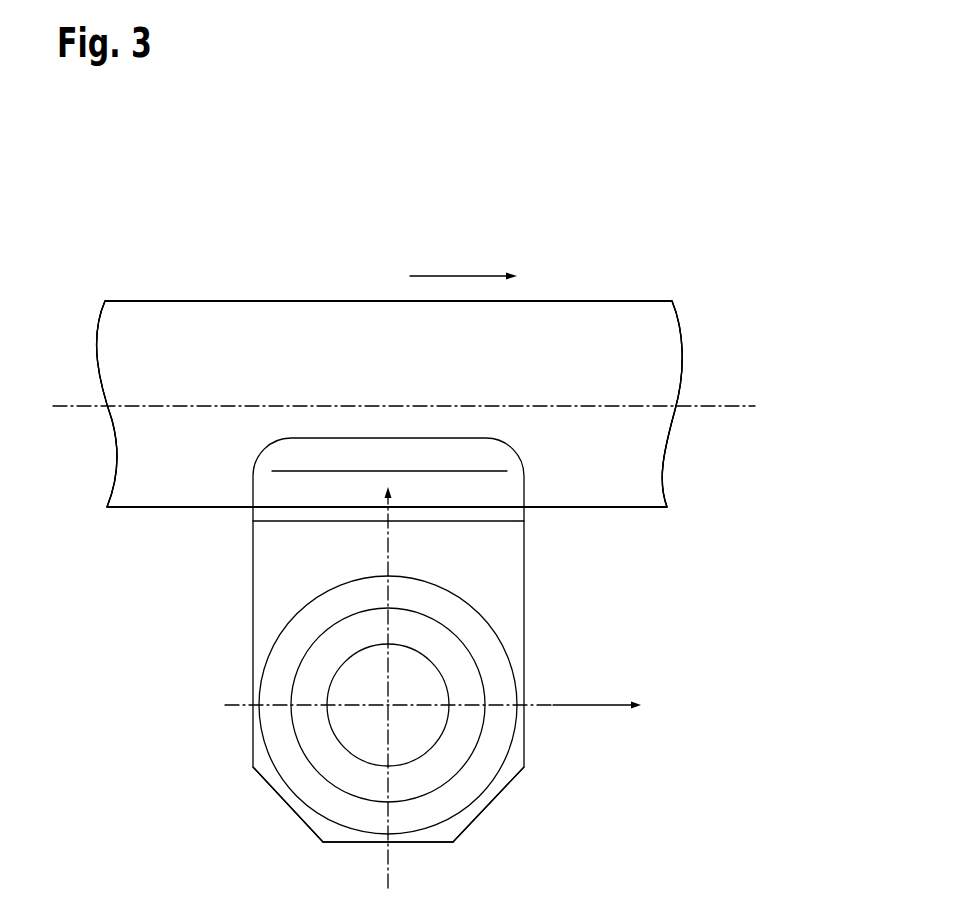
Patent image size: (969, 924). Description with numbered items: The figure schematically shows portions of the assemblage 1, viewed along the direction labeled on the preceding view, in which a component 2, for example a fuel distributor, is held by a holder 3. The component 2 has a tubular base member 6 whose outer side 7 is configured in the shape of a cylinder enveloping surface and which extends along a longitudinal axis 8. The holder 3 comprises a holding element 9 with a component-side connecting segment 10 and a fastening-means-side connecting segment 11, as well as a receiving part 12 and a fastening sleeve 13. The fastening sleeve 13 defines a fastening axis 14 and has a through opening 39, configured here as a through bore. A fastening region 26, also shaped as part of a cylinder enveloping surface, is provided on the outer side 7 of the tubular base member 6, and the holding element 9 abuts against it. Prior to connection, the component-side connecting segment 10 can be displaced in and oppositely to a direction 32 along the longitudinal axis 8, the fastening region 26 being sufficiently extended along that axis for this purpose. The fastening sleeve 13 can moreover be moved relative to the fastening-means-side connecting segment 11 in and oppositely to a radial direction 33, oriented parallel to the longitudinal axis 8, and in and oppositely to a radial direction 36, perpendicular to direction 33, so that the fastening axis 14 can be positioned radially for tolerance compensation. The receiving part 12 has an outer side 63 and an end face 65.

The assemblage 1 is at (692, 248).
The component 2 is at (647, 365).
The tubular base member 6 is at (647, 365).
The holder 3 is at (505, 830).
The outer side 7 is at (188, 300).
The longitudinal axis 8 is at (718, 406).
The holding element 9 is at (275, 555).
The component-side connecting segment 10 is at (287, 483).
The fastening-means-side connecting segment 11 is at (507, 773).
The receiving part 12 is at (494, 745).
The fastening sleeve 13 is at (413, 782).
The fastening axis 14 is at (388, 706).
The fastening region 26 is at (558, 508).
The direction 32 is at (461, 276).
The radial direction 33 is at (588, 706).
The radial direction 36 is at (380, 547).
The through opening 39 is at (367, 737).
The outer side 63 is at (267, 757).
The end face 65 is at (309, 786).